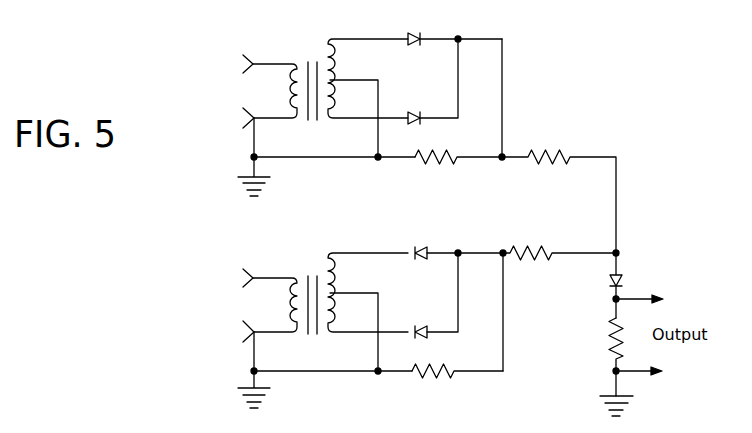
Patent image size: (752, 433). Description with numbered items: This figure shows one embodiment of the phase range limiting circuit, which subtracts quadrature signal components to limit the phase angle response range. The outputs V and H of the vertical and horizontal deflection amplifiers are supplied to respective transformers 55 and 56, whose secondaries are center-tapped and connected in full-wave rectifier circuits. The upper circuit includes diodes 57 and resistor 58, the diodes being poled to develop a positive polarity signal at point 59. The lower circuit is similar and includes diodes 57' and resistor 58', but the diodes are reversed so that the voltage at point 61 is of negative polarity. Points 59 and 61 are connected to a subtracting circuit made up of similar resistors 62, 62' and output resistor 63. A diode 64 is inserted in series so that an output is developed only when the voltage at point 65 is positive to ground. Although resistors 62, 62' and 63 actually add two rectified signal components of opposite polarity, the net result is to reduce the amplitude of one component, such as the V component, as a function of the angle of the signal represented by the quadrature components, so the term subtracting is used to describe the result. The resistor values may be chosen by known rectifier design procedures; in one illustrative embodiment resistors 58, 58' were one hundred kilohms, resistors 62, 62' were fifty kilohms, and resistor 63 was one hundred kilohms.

The transformer 55 is at (308, 62).
The transformer 56 is at (310, 276).
The diodes 57 is at (455, 78).
The diodes 57' is at (456, 292).
The resistor 58 is at (458, 175).
The resistor 58' is at (456, 390).
The point 59 is at (504, 156).
The point 61 is at (504, 250).
The resistor 62 is at (559, 201).
The resistor 62' is at (559, 240).
The output resistor 63 is at (608, 333).
The diode 64 is at (624, 282).
The point 65 is at (618, 253).